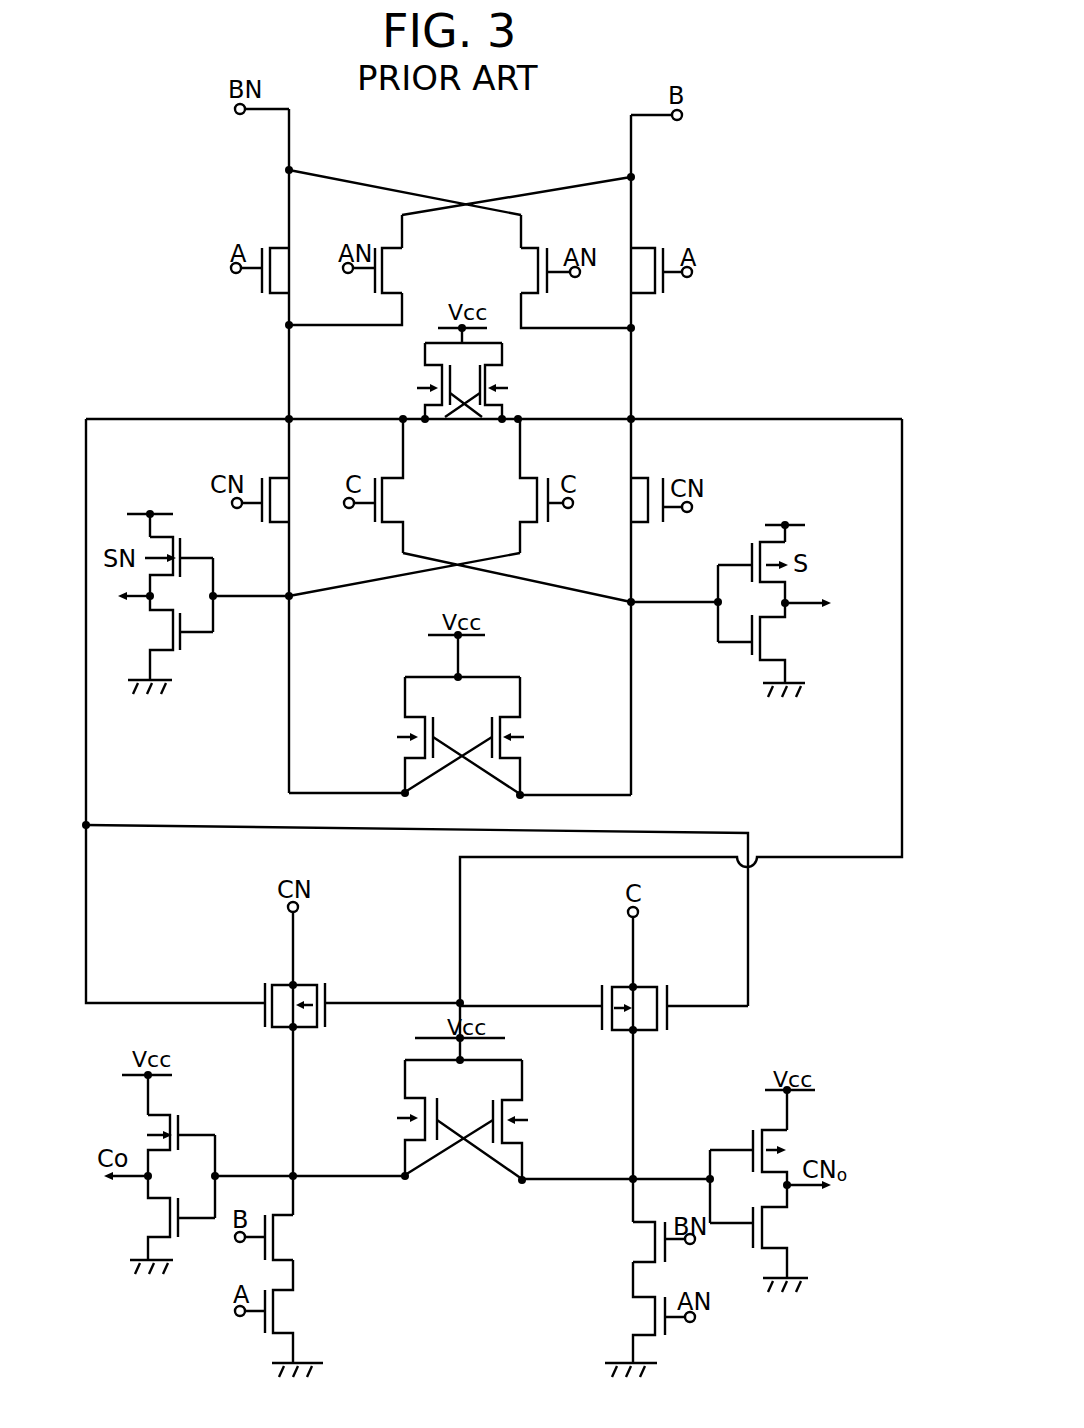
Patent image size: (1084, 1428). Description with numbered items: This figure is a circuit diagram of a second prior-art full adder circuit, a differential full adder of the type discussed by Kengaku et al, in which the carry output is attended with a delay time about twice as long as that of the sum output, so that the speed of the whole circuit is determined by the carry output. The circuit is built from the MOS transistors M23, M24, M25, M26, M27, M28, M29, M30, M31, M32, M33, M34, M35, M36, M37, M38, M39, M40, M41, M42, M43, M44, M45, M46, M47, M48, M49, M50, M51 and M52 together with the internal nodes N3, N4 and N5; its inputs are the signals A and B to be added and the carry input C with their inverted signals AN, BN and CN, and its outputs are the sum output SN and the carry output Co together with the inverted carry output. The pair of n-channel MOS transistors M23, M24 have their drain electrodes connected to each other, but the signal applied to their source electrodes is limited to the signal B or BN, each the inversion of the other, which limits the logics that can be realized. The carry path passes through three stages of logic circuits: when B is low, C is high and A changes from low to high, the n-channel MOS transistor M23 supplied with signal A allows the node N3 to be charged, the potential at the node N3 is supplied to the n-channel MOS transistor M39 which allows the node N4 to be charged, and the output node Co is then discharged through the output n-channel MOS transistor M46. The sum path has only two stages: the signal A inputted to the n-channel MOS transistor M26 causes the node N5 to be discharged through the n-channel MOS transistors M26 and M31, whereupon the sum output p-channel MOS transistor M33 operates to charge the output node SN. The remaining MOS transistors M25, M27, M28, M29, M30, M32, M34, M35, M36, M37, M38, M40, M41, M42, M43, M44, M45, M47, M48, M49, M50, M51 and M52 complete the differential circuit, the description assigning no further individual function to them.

The n-channel MOS transistor M23 is at (277, 270).
The MOS transistor M24 is at (389, 270).
The transistor M25 is at (533, 270).
The n-channel MOS transistor M26 is at (646, 270).
The cross-coupled load transistor M27 is at (406, 381).
The cross-coupled load transistor M28 is at (523, 381).
The transistor M29 is at (278, 500).
The transistor M30 is at (391, 486).
The n-channel MOS transistor M31 is at (526, 486).
The transistor M32 is at (644, 500).
The sum output p-channel MOS transistor M33 is at (192, 563).
The inverter transistor M34 is at (160, 638).
The inverter transistor M35 is at (736, 567).
The inverter transistor M36 is at (767, 643).
The cross-coupled load transistor M37 is at (386, 735).
The cross-coupled load transistor M38 is at (537, 736).
The n-channel MOS transistor M39 is at (257, 1000).
The pass gate transistor M40 is at (392, 1000).
The pass gate transistor M41 is at (558, 1005).
The pass gate transistor M42 is at (707, 1005).
The cross-coupled load transistor M43 is at (389, 1118).
The cross-coupled load transistor M44 is at (538, 1120).
The inverter transistor M45 is at (193, 1141).
The output n-channel MOS transistor M46 is at (161, 1218).
The inverter transistor M47 is at (741, 1152).
The inverter transistor M48 is at (764, 1231).
The transistor M49 is at (282, 1237).
The transistor M50 is at (282, 1311).
The transistor M51 is at (651, 1242).
The transistor M52 is at (638, 1312).
The node N3 is at (289, 419).
The node N4 is at (297, 1179).
The node N5 is at (293, 599).